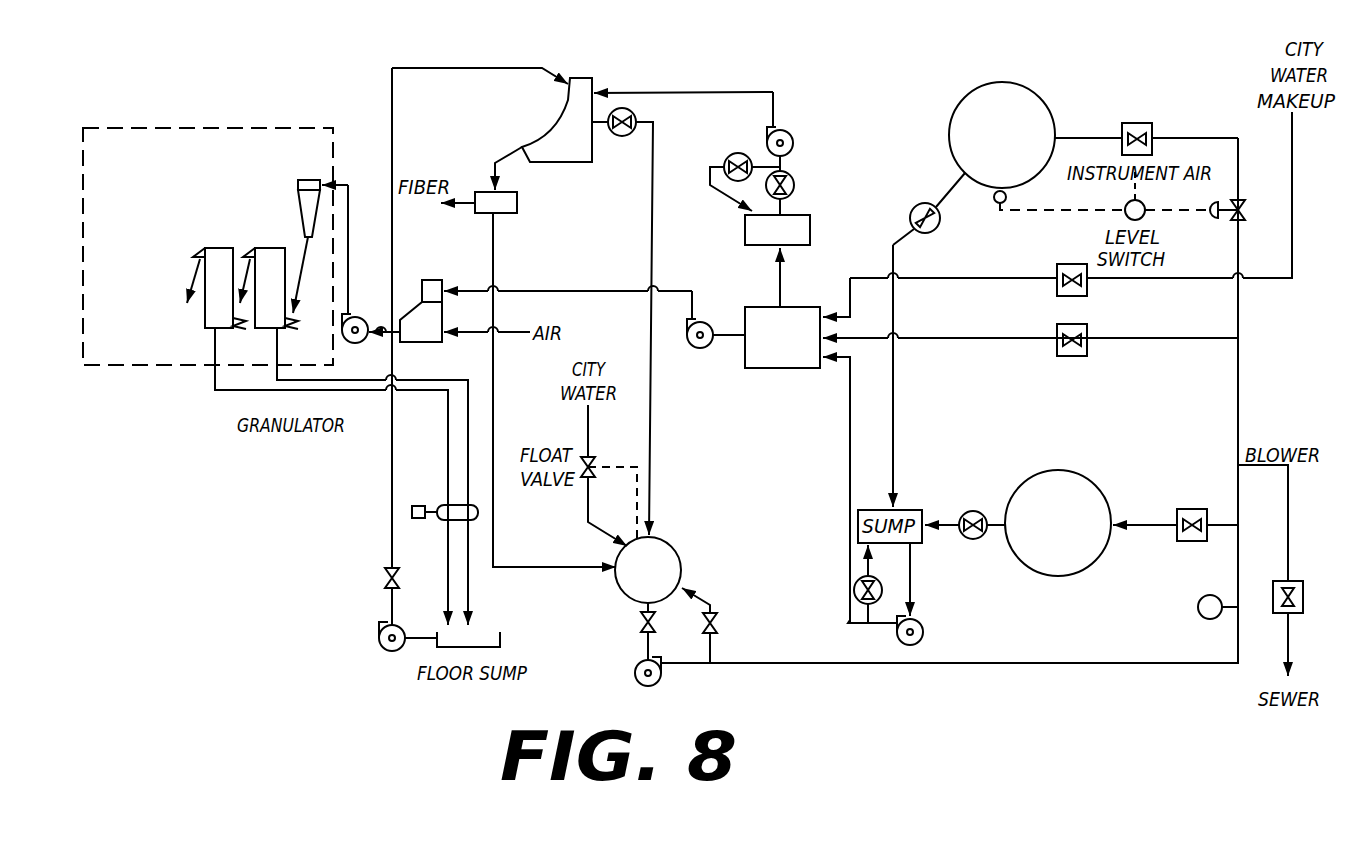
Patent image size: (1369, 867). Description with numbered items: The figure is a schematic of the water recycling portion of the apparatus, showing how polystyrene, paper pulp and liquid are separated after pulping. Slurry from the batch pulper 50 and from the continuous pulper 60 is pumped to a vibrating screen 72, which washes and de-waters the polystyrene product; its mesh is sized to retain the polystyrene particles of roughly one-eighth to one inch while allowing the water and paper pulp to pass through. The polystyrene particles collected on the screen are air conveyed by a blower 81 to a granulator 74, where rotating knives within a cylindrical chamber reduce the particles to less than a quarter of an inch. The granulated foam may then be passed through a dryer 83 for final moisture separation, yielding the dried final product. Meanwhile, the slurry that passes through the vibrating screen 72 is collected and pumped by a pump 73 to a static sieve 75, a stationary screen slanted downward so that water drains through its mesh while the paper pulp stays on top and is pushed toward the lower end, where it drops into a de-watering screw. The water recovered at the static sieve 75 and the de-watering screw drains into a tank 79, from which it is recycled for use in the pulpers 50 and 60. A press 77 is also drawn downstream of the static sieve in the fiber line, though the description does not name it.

The dryer 83 is at (215, 128).
The static sieve 75 is at (560, 123).
The press 77 is at (483, 215).
The granulator 74 is at (418, 303).
The pump 73 is at (803, 214).
The blower 81 is at (702, 319).
The vibrating screen 72 is at (780, 370).
The continuous pulper 60 is at (975, 100).
The tank 79 is at (662, 548).
The batch pulper 50 is at (1058, 577).